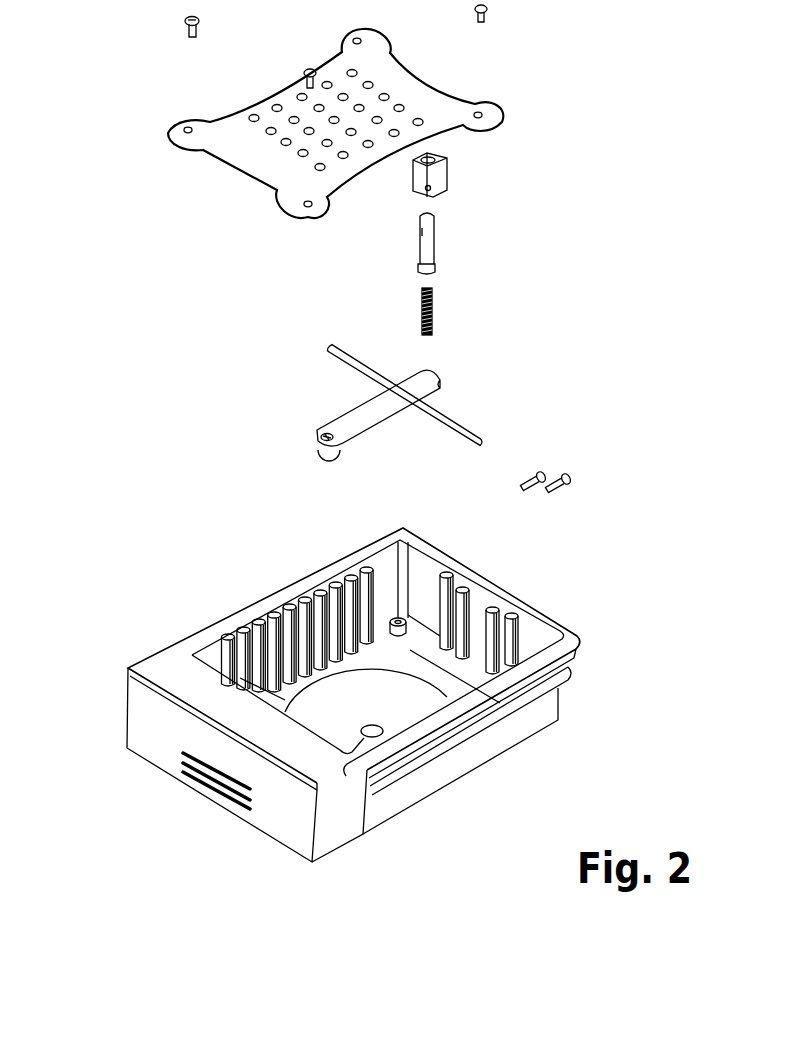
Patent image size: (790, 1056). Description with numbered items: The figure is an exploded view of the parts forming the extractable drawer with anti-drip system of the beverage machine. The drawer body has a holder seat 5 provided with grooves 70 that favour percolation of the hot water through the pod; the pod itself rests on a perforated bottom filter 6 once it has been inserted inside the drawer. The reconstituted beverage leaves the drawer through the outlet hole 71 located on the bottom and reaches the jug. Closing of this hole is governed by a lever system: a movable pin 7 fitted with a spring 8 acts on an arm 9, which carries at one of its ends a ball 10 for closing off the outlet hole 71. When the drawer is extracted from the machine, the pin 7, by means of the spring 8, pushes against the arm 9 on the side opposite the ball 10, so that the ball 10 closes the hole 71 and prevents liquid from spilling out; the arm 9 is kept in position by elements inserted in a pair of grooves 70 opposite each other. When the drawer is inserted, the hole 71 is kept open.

The holder seat 5 is at (351, 683).
The perforated bottom filter 6 is at (262, 151).
The movable pin 7 is at (419, 246).
The spring 8 is at (433, 307).
The arm 9 is at (356, 413).
The ball 10 is at (325, 455).
The grooves 70 is at (352, 577).
The outlet hole 71 is at (378, 732).